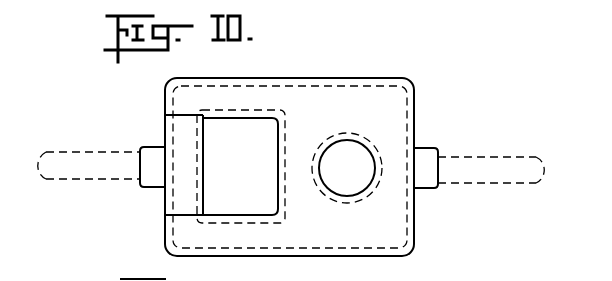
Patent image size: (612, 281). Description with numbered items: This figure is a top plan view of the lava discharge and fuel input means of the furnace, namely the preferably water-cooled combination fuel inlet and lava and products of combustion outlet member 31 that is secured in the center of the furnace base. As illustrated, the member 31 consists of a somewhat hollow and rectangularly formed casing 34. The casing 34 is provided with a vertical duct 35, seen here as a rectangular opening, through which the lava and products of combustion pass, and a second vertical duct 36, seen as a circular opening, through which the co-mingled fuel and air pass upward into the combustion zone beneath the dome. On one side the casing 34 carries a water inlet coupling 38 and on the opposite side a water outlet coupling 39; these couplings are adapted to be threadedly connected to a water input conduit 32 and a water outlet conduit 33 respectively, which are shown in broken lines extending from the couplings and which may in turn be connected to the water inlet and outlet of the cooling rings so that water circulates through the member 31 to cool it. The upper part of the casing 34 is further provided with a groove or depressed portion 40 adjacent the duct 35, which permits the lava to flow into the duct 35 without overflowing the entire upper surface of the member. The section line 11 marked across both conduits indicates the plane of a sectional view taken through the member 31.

The combination fuel inlet and lava and products of combustion outlet member 31 is at (418, 103).
The water input conduit 32 is at (63, 151).
The water outlet conduit 33 is at (472, 155).
The casing 34 is at (322, 79).
The vertical duct 35 is at (278, 160).
The vertical duct 36 is at (320, 168).
The water inlet coupling 38 is at (144, 146).
The water outlet coupling 39 is at (431, 149).
The groove or depressed portion 40 is at (183, 192).
The section line 11- 11 is at (115, 167).